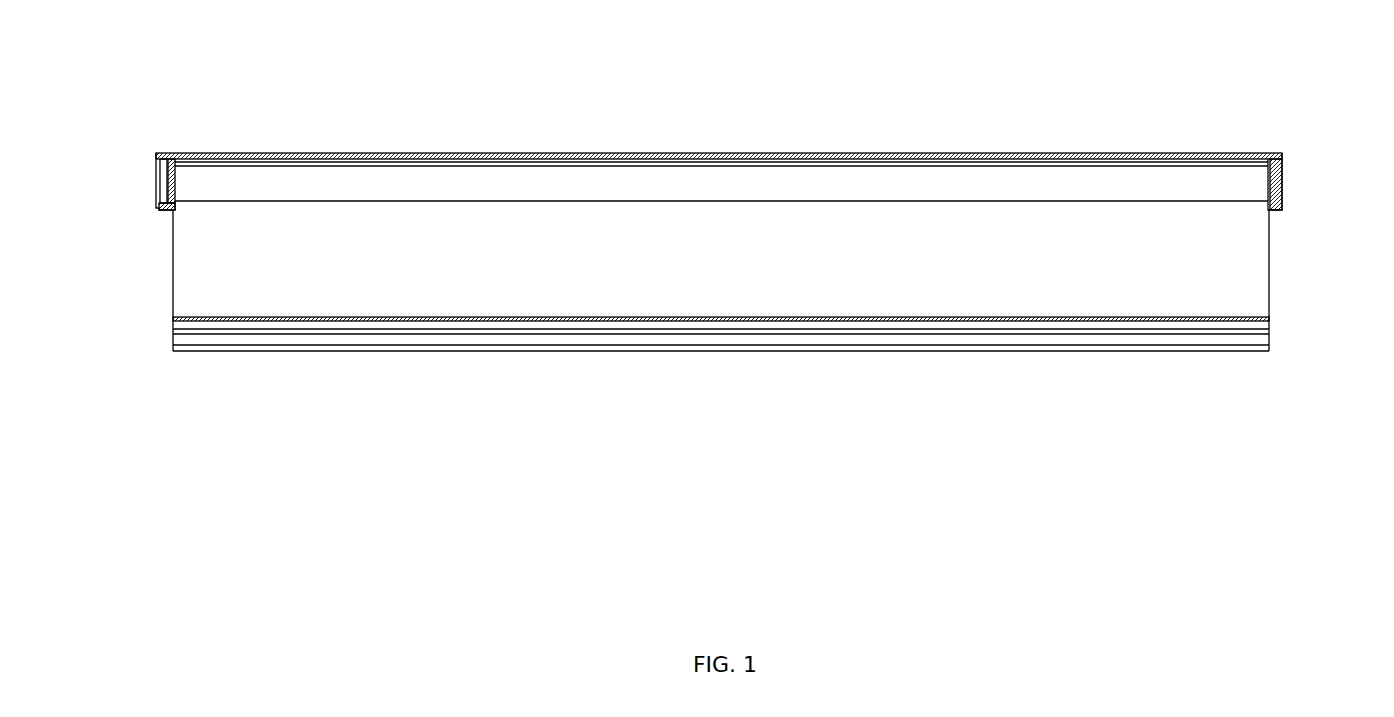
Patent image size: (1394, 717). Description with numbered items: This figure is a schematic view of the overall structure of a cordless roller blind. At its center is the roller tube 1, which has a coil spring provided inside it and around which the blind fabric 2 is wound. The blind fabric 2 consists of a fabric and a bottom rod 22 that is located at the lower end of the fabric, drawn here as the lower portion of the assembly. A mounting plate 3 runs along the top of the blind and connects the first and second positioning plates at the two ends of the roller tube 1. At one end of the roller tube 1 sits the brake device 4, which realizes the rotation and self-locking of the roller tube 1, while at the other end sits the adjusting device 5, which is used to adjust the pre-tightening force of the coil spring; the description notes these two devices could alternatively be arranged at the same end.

The roller tube 1 is at (865, 183).
The blind fabric 2 is at (771, 290).
The bottom rod 22 is at (958, 350).
The mounting plate 3 is at (723, 153).
The brake device 4 is at (157, 168).
The adjusting device 5 is at (1283, 178).